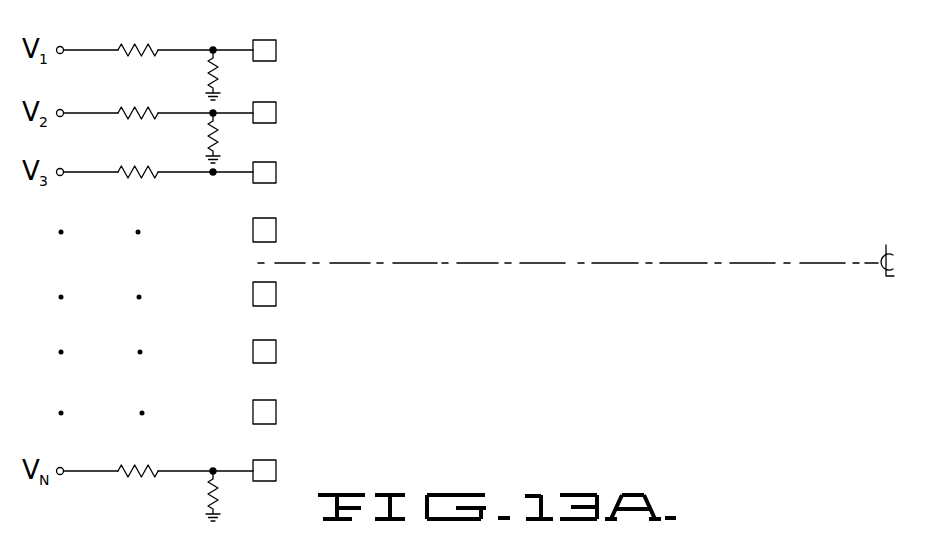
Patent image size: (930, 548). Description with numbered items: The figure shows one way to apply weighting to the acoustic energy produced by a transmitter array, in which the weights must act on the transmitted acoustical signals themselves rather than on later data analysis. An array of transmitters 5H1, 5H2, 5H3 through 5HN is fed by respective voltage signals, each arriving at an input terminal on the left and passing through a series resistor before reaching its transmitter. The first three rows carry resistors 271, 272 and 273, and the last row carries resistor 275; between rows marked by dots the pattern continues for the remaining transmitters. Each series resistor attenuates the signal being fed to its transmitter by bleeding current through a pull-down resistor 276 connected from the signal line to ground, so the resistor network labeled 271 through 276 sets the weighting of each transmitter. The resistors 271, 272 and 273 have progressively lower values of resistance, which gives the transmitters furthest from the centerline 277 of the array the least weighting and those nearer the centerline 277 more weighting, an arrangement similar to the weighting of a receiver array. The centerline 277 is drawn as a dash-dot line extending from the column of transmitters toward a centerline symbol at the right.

The resistor 271 is at (133, 41).
The resistor 272 is at (132, 105).
The resistor 273 is at (129, 166).
The resistor 275 is at (133, 463).
The pull-down resistor 276 is at (207, 76).
The centerline 277 is at (605, 262).
The transmitter 5H1 is at (276, 54).
The transmitter 5H2 is at (276, 117).
The transmitter 5H3 is at (276, 176).
The transmitter 5HN is at (276, 474).